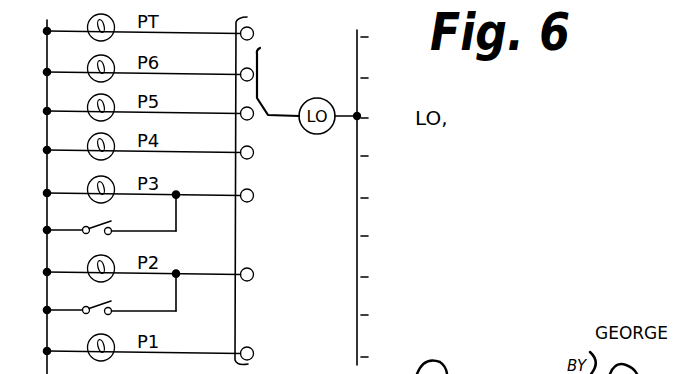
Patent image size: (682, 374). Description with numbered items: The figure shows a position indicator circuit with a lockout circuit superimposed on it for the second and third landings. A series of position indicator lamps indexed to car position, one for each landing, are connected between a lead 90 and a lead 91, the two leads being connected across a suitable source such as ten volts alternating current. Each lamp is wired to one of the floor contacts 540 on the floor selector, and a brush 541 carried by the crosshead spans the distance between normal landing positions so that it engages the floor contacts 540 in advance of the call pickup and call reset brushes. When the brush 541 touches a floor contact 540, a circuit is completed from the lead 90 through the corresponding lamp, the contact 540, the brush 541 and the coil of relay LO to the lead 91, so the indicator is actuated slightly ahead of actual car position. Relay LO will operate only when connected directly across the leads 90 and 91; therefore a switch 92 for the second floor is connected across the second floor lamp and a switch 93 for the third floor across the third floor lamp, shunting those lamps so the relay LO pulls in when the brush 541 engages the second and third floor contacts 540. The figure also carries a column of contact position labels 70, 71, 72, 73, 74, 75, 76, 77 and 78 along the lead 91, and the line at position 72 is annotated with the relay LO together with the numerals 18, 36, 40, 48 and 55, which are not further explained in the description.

The lead 90 is at (47, 61).
The lead 91 is at (357, 66).
The switch 92 is at (113, 301).
The switch 93 is at (114, 221).
The floor contacts 540 is at (235, 164).
The brush 541 is at (259, 69).
The contact position 70 is at (378, 37).
The contact position 71 is at (378, 78).
The contact position 72 is at (381, 118).
The contact position 73 is at (378, 156).
The contact position 74 is at (378, 198).
The contact position 75 is at (378, 236).
The contact position 76 is at (378, 277).
The contact position 77 is at (378, 315).
The contact position 78 is at (378, 357).
The element 18 is at (478, 118).
The element 36 is at (509, 118).
The element 40 is at (564, 128).
The element 48 is at (613, 128).
The element 55 is at (644, 118).